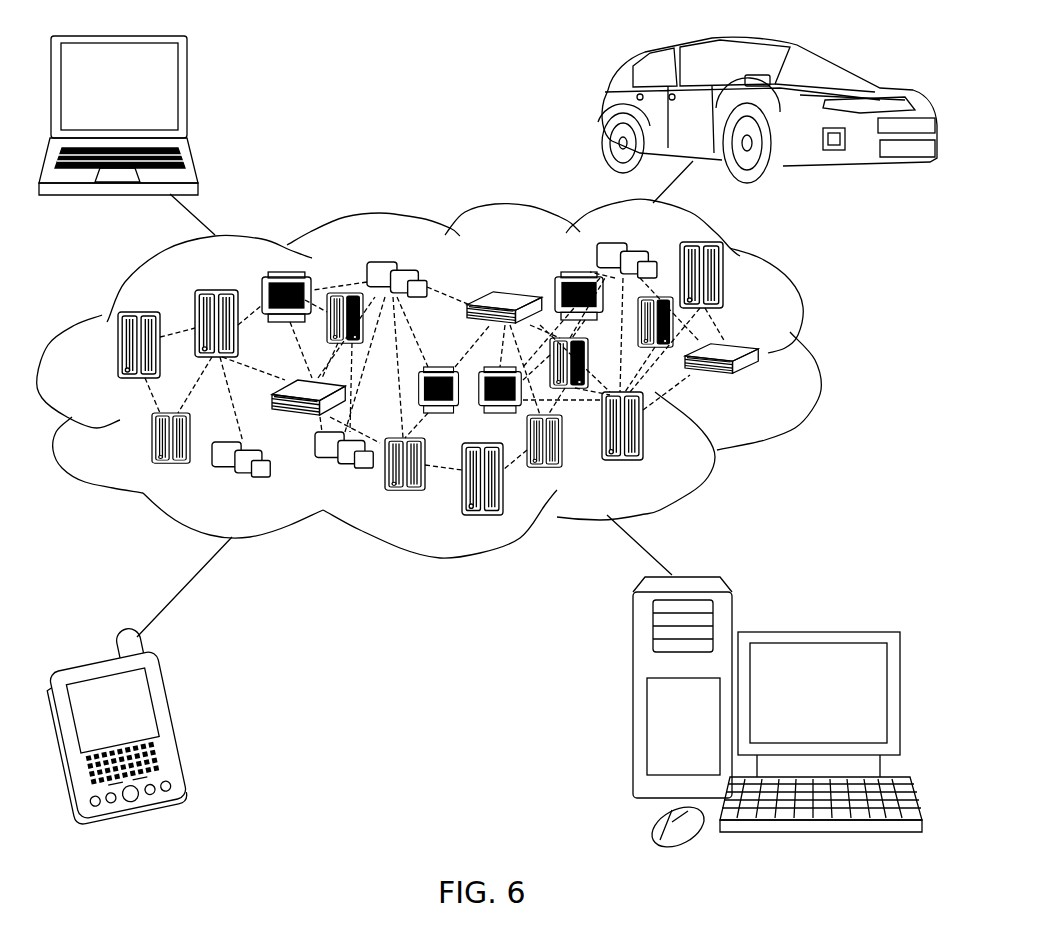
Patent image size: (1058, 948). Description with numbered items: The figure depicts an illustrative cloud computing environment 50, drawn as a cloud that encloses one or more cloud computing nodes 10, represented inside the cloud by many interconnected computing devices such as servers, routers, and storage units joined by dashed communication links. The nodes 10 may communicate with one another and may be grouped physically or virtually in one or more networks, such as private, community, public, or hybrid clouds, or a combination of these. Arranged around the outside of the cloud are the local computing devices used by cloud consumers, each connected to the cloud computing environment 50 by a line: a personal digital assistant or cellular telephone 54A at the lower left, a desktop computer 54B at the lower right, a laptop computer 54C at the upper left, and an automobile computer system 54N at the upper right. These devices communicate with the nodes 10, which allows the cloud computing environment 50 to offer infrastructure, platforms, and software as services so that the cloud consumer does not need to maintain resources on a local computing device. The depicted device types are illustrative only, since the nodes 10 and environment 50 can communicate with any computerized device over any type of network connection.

The laptop computer 54C is at (187, 97).
The automobile computer system 54N is at (607, 110).
The personal digital assistant (PDA) or cellular telephone 54A is at (173, 721).
The desktop computer 54B is at (815, 632).
The cloud computing environment 50 is at (817, 357).
The cloud computing node 10 is at (758, 383).